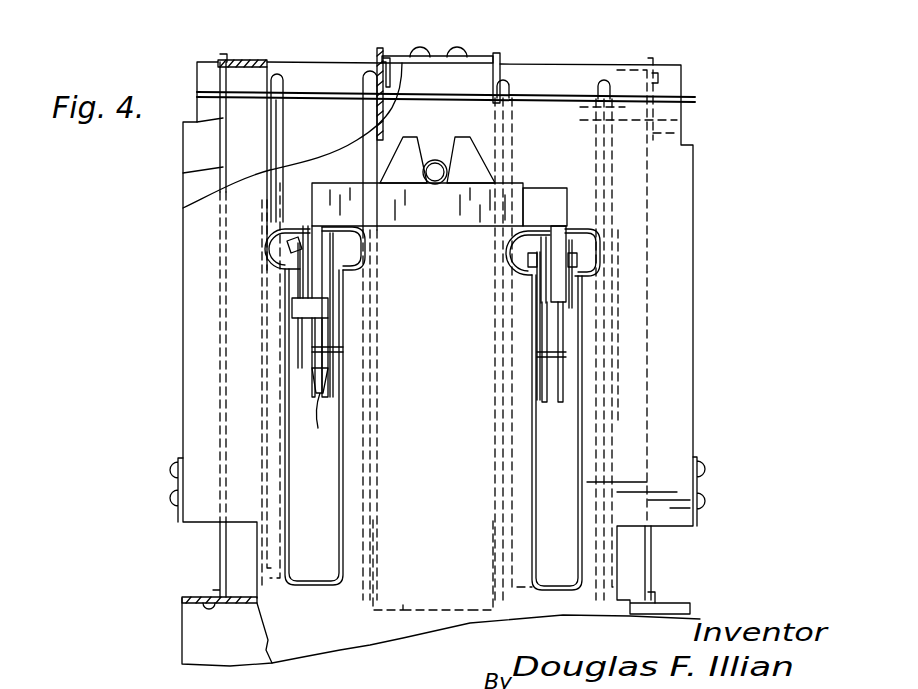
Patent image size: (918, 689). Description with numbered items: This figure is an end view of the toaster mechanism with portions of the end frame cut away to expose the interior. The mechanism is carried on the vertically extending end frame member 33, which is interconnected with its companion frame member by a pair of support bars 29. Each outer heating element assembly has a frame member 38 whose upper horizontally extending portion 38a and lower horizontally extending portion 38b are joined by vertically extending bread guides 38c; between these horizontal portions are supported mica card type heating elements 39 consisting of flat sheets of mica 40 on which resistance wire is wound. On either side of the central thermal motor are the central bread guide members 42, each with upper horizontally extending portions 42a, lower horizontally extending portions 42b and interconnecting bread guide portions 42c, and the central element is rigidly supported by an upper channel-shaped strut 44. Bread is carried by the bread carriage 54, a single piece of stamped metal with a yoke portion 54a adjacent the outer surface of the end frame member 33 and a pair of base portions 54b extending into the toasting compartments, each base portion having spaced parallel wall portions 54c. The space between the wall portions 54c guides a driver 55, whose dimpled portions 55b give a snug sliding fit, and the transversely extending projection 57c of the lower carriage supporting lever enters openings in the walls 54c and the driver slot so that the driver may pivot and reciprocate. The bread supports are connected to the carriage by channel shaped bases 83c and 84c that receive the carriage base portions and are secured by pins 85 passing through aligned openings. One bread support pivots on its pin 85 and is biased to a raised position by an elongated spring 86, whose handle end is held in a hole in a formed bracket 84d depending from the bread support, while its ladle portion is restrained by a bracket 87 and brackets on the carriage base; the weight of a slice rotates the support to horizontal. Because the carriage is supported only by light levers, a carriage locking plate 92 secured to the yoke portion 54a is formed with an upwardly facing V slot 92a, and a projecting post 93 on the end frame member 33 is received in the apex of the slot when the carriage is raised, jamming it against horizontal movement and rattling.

The support bars 29 is at (172, 480).
The end frame member 33 is at (685, 397).
The frame member 38 is at (247, 60).
The upper horizontally extending portion 38a is at (272, 64).
The lower horizontally extending portion 38b is at (249, 603).
The bread guides 38c is at (284, 136).
The heating elements 39 is at (184, 172).
The sheets of mica 40 is at (196, 123).
The central bread guide members 42 is at (376, 61).
The upper horizontally extending portions 42a is at (380, 47).
The lower horizontally extending portions 42b is at (468, 605).
The bread guide portions 42c is at (361, 113).
The upper channel-shaped strut 44 is at (446, 57).
The bread carriage 54 is at (547, 196).
The yoke portion 54a is at (514, 190).
The base portions 54b is at (345, 250).
The wall portions 54c is at (562, 387).
The driver 55 is at (330, 375).
The dimpled portions 55b is at (319, 405).
The transversely extending projection 57c is at (343, 353).
The base 83c is at (534, 270).
The base 84c is at (363, 266).
The formed bracket 84d is at (286, 228).
The pins 85 is at (291, 268).
The elongated spring 86 is at (300, 348).
The bracket 87 is at (300, 310).
The carriage locking plate 92 is at (470, 150).
The V slot 92a is at (424, 142).
The projecting post 93 is at (435, 174).